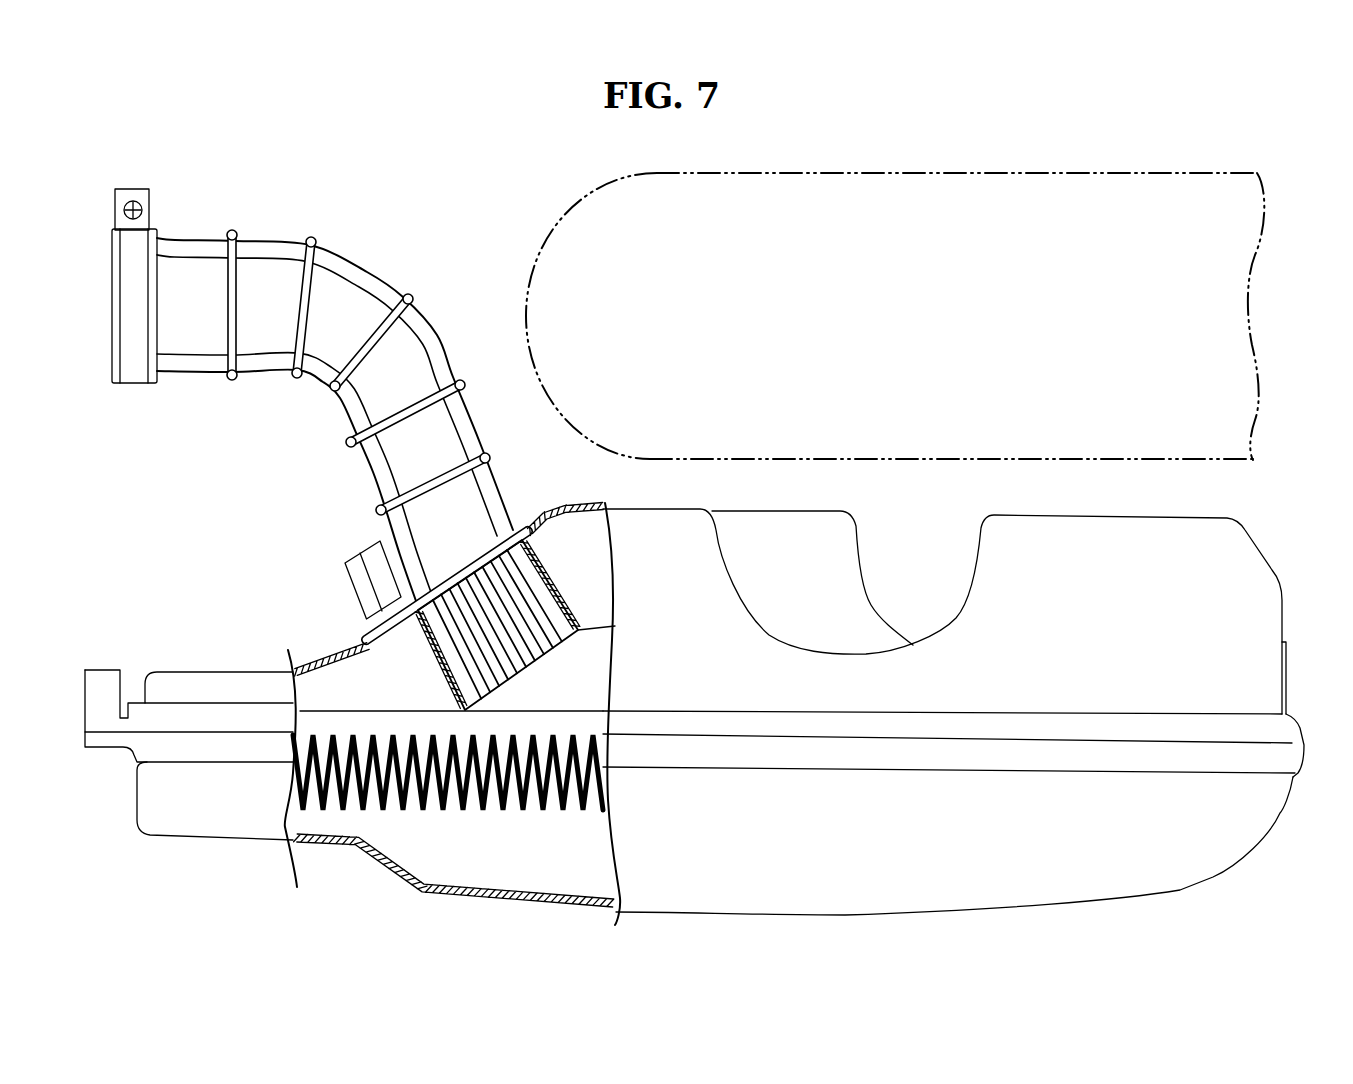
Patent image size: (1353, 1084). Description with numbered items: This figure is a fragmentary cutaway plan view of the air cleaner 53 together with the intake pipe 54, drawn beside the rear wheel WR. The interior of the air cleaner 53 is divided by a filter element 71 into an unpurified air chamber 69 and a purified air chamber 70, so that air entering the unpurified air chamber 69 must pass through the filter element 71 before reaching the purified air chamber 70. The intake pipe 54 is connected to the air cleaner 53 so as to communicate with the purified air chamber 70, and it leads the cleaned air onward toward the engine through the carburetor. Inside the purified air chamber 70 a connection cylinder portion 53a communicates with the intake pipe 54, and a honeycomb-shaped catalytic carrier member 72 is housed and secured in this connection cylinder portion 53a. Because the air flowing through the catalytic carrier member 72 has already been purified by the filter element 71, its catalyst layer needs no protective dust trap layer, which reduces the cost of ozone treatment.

The air cleaner 53 is at (866, 855).
The connection cylinder portion 53a is at (597, 608).
The intake pipe 54 is at (367, 280).
The unpurified air chamber 69 is at (580, 876).
The purified air chamber 70 is at (390, 706).
The filter element 71 is at (526, 750).
The catalytic carrier member 72 is at (515, 598).
The rear wheel WR is at (817, 173).